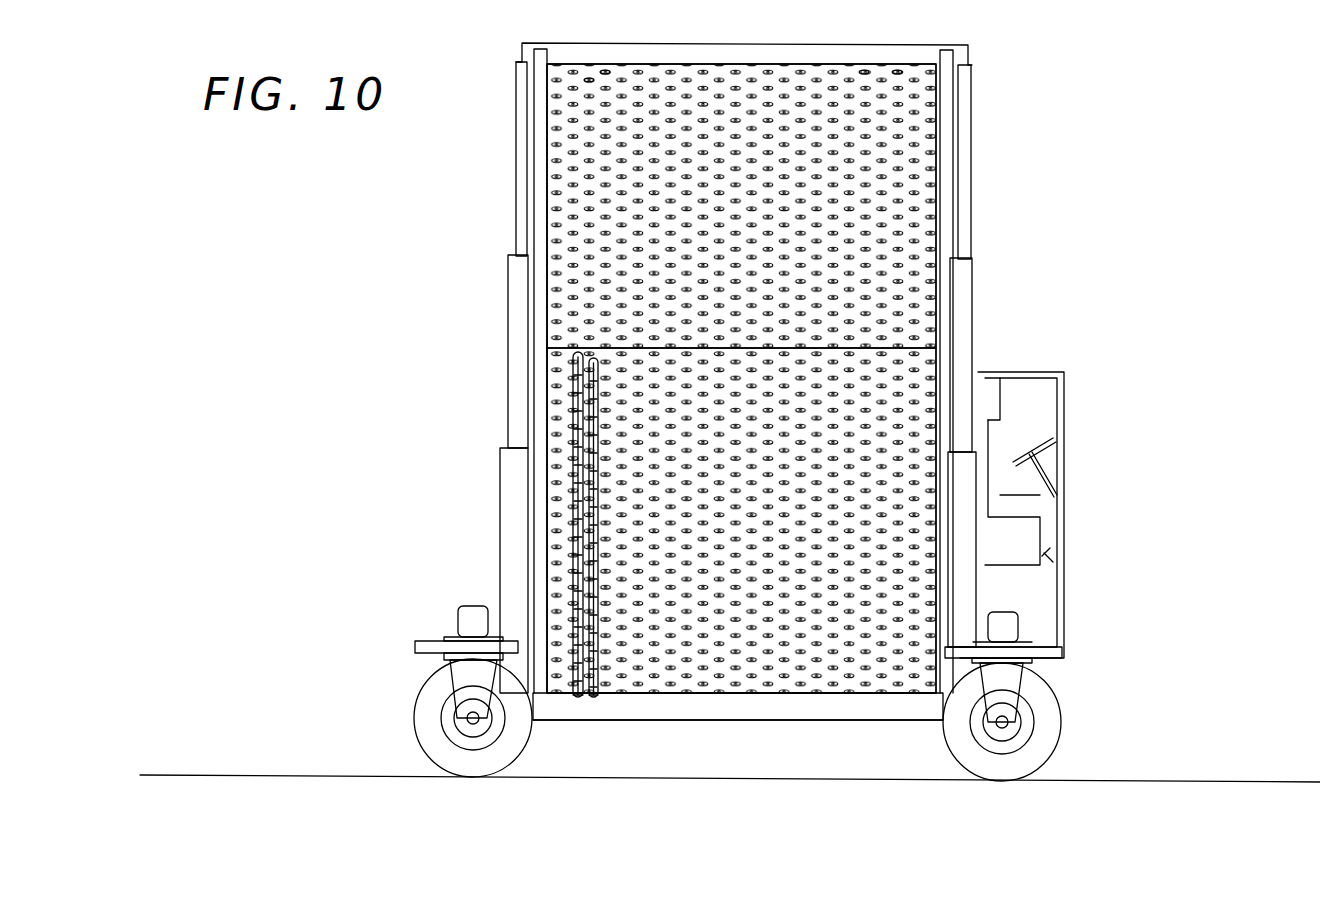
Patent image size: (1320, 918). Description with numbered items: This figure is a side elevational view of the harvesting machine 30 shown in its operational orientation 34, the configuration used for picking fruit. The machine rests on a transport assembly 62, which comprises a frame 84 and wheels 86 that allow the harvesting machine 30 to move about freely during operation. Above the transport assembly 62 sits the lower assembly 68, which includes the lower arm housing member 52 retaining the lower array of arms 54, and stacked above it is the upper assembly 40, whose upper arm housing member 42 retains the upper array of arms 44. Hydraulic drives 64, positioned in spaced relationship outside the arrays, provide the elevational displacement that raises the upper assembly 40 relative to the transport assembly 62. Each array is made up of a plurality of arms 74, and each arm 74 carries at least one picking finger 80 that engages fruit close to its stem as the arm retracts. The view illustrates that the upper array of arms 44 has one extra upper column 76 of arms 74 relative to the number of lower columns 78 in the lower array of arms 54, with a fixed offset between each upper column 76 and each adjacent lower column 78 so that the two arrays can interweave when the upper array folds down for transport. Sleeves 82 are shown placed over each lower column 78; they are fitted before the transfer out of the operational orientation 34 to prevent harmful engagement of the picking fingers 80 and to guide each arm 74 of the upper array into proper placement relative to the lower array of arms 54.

The harvesting machine 30 is at (1183, 692).
The operational orientation 34 is at (1188, 127).
The upper assembly 40 is at (542, 197).
The upper arm housing member 42 is at (785, 72).
The upper array of arms 44 is at (687, 115).
The lower arm housing member 52 is at (687, 693).
The lower array of arms 54 is at (767, 653).
The transport assembly 62 is at (903, 722).
The hydraulic drives 64 is at (508, 357).
The lower assembly 68 is at (537, 488).
The arms 74 is at (897, 73).
The upper column 76 is at (588, 78).
The lower column 78 is at (638, 755).
The picking finger 80 is at (860, 72).
The sleeves 82 is at (573, 570).
The frame 84 is at (758, 720).
The wheels 86 is at (417, 740).